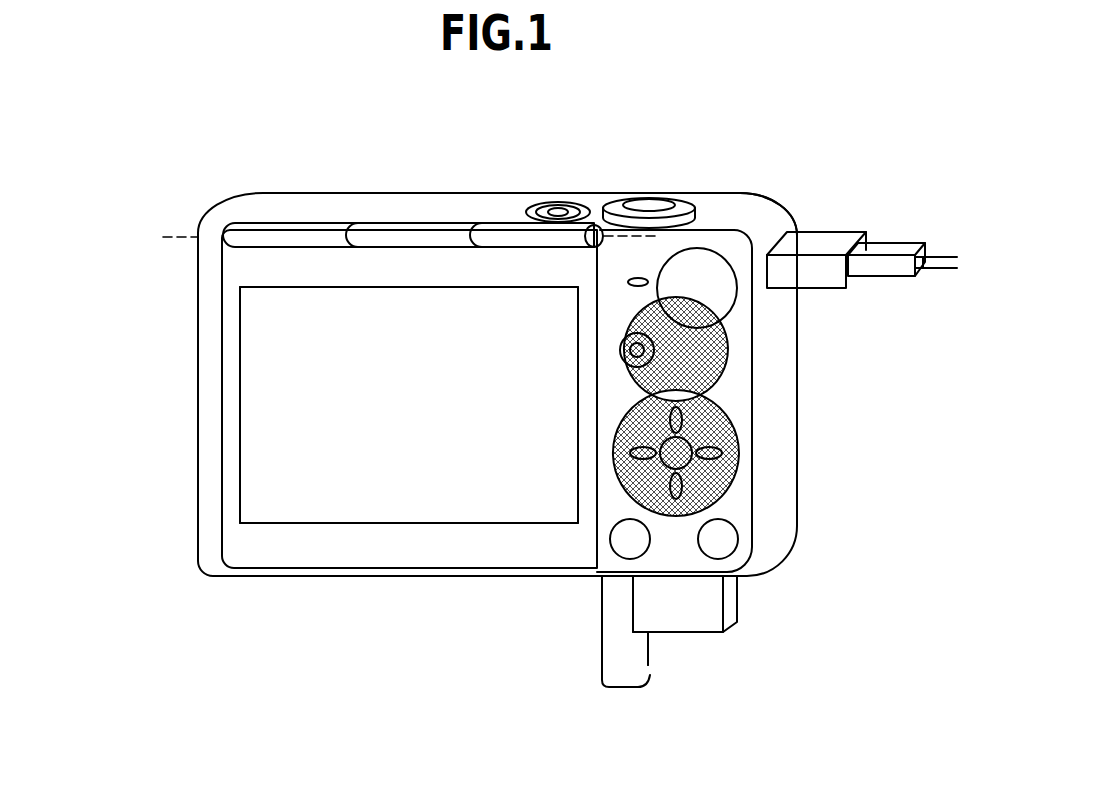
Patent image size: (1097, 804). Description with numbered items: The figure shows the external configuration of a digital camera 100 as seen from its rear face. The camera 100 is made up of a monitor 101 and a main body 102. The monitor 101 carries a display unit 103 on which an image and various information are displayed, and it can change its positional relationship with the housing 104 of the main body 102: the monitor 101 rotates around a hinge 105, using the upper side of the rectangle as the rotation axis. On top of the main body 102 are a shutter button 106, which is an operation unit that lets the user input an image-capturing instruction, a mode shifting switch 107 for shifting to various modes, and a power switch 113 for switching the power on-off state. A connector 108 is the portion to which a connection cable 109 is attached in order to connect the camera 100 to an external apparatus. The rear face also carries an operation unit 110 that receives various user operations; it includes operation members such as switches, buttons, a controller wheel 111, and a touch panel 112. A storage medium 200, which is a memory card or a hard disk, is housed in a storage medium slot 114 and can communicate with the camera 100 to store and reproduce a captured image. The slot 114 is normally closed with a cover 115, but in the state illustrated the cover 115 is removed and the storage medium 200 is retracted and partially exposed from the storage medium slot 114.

The digital camera 100 is at (108, 168).
The monitor 101 is at (222, 281).
The main body 102 is at (223, 205).
The display unit 103 is at (240, 363).
The housing 104 is at (280, 203).
The hinge 105 is at (422, 233).
The shutter button 106 is at (650, 205).
The mode shifting switch 107 is at (712, 270).
The connector 108 is at (780, 237).
The connection cable 109 is at (895, 248).
The operation unit 110 is at (650, 540).
The controller wheel 111 is at (623, 410).
The touch panel 112 is at (423, 497).
The power switch 113 is at (558, 212).
The storage medium slot 114 is at (657, 576).
The cover 115 is at (650, 670).
The storage medium 200 is at (717, 612).